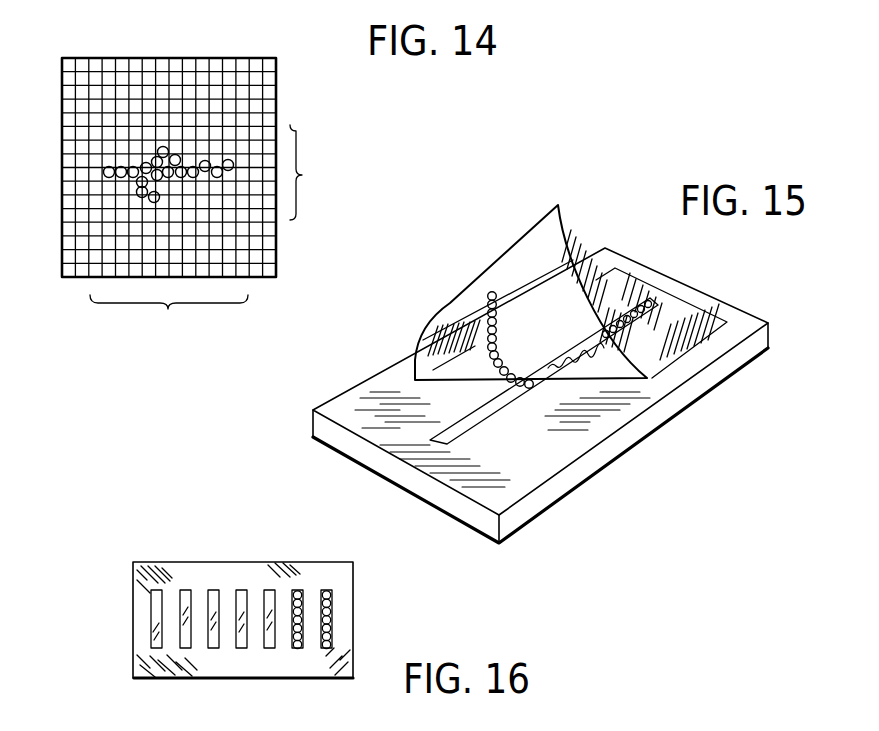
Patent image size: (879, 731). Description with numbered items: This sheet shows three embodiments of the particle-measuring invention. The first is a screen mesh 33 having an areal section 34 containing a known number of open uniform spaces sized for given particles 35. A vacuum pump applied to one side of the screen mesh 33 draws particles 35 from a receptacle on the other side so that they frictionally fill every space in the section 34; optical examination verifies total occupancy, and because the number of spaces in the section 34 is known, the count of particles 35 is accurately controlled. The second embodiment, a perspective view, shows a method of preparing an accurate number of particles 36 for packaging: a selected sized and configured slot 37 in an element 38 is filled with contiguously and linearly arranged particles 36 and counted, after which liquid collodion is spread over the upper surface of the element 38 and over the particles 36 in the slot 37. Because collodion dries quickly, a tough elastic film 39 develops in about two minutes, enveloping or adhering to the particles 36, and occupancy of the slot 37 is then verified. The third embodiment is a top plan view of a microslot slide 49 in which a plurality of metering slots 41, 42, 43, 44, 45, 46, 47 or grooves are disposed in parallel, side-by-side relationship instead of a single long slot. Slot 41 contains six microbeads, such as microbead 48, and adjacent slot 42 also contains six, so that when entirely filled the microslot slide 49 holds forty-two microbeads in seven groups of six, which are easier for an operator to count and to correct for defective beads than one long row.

In FIG. 14, the screen mesh 33 is at (277, 88).
In FIG. 14, the areal section 34 is at (214, 231).
In FIG. 14, the particles 35 is at (97, 161).
In FIG. 15, the particles 36 is at (486, 300).
In FIG. 15, the slot 37 is at (483, 412).
In FIG. 15, the element 38 is at (718, 385).
In FIG. 15, the film 39 is at (536, 228).
In FIG. 16, the metering slot 41 is at (328, 649).
In FIG. 16, the metering slot 42 is at (296, 588).
In FIG. 16, the metering slot 43 is at (270, 649).
In FIG. 16, the metering slot 44 is at (240, 588).
In FIG. 16, the metering slot 45 is at (217, 649).
In FIG. 16, the metering slot 46 is at (184, 588).
In FIG. 16, the metering slot 47 is at (150, 611).
In FIG. 16, the microbead 48 is at (336, 592).
In FIG. 16, the microslot slide 49 is at (123, 566).